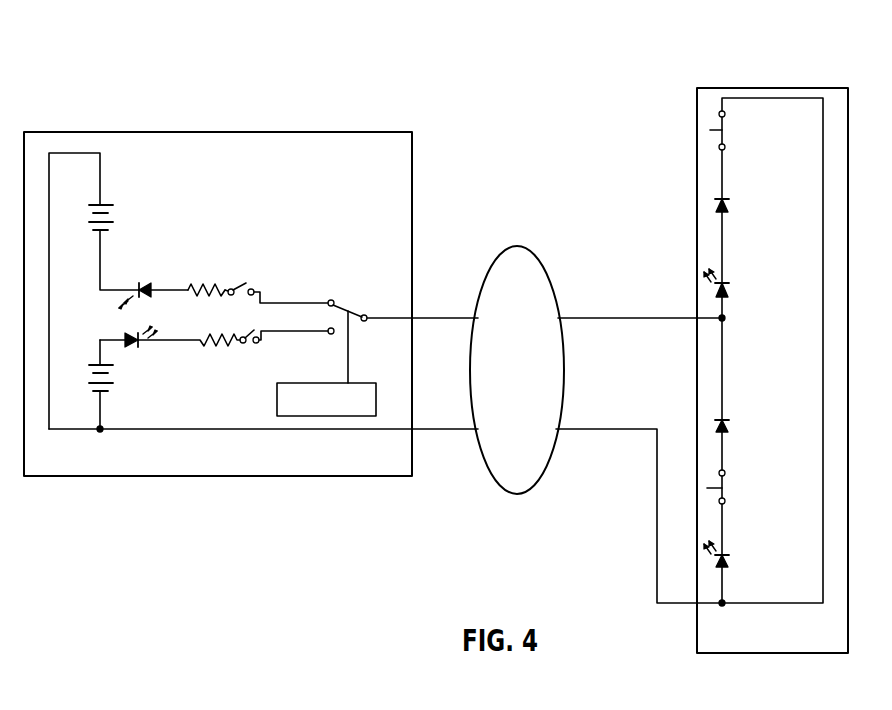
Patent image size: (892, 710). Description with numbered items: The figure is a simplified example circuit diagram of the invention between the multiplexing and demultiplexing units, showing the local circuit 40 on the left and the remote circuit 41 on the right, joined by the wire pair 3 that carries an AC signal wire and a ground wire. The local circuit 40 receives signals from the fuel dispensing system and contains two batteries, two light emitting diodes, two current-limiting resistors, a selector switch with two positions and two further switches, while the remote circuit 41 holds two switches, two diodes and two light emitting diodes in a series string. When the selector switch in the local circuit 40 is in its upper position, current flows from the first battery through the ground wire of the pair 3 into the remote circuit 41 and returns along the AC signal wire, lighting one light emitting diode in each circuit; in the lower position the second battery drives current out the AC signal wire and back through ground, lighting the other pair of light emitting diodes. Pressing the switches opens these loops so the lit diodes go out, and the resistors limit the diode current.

The local circuit 40 is at (327, 132).
The remote circuit 41 is at (790, 88).
The pair 3 is at (608, 296).